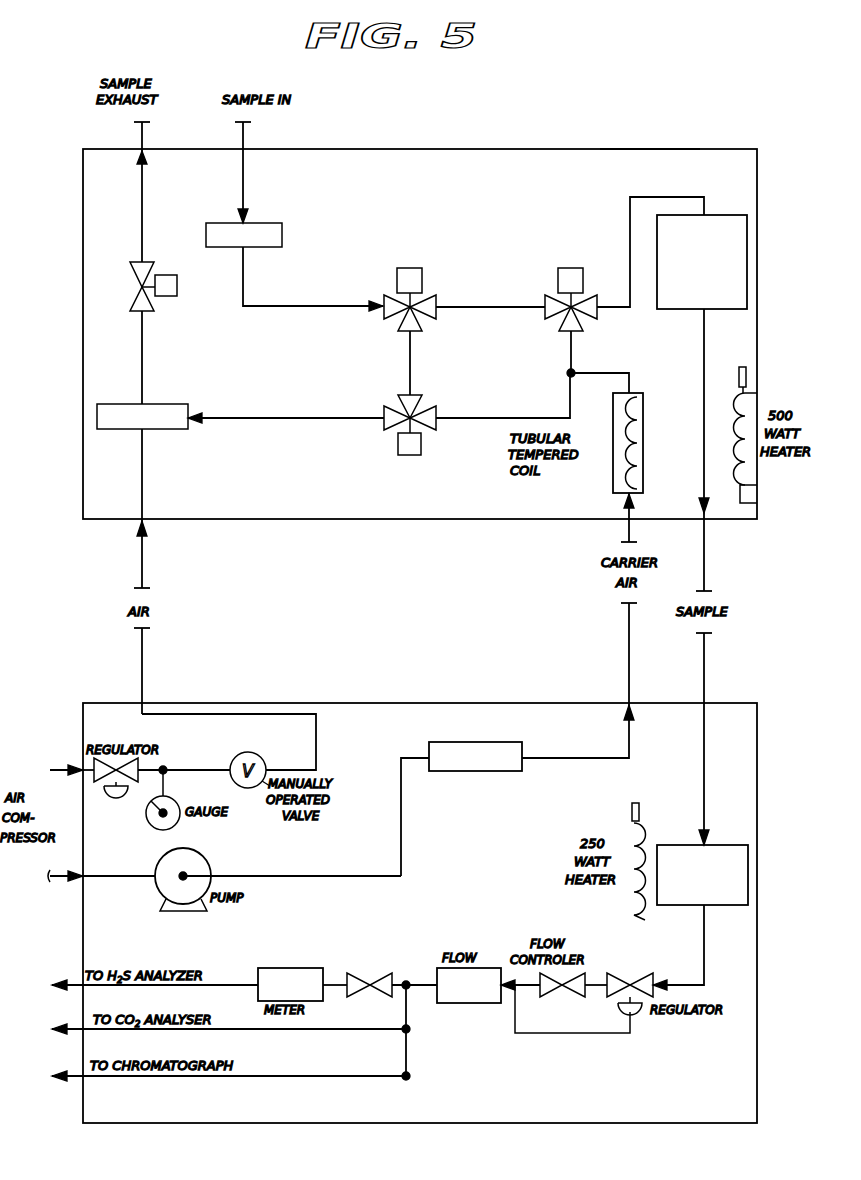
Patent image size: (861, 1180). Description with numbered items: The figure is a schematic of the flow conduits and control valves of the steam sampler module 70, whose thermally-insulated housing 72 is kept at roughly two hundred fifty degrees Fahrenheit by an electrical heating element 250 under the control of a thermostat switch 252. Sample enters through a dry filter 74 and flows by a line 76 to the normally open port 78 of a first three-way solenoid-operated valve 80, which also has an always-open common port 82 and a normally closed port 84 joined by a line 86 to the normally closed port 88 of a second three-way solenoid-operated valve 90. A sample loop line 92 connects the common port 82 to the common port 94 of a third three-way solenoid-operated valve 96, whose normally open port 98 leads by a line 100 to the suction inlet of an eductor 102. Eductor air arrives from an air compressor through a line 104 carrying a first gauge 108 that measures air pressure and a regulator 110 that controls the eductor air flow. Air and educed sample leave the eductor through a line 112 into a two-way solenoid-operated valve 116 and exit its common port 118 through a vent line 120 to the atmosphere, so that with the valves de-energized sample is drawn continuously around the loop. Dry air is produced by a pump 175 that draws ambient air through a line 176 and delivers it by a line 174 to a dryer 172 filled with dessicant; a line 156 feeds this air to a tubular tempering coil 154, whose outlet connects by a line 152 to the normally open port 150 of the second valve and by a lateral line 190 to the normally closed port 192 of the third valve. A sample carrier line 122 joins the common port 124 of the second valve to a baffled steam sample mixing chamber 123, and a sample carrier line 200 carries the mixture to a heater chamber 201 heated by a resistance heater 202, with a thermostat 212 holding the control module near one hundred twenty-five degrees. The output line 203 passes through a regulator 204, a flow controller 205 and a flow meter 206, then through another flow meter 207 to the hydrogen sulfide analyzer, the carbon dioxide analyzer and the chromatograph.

The steam sampler module 70 is at (432, 149).
The thermally-insulated housing 72 is at (645, 124).
The dry filter 74 is at (282, 236).
The line 76 is at (298, 310).
The normally open port 78 is at (383, 313).
The first three-way solenoid-operated valve 80 is at (422, 275).
The common port 82 is at (424, 328).
The normally closed port 84 is at (436, 306).
The line 86 is at (492, 310).
The normally closed port 88 is at (548, 318).
The second three-way solenoid-operated valve 90 is at (566, 268).
The sample loop line 92 is at (412, 360).
The common port 94 is at (400, 410).
The third three-way solenoid-operated valve 96 is at (413, 458).
The normally open port 98 is at (385, 428).
The line 100 is at (278, 420).
The eductor 102 is at (168, 404).
The line 104 is at (145, 475).
The first gauge 108 is at (180, 820).
The regulator 110 is at (140, 763).
The line 112 is at (145, 358).
The two-way solenoid-operated valve 116 is at (178, 292).
The common port 118 is at (150, 266).
The vent line 120 is at (150, 210).
The sample carrier line 122 is at (630, 217).
The baffled steam sample mixing chamber 123 is at (706, 222).
The common port 124 is at (597, 315).
The normally open port 150 is at (585, 328).
The line 152 is at (618, 374).
The tubular tempering coil 154 is at (643, 455).
The line 156 is at (600, 758).
The dryer 172 is at (513, 772).
The line 174 is at (402, 850).
The pump 175 is at (205, 866).
The line 176 is at (108, 876).
The lateral line 190 is at (505, 418).
The normally closed port 192 is at (437, 428).
The sample carrier line 200 is at (703, 420).
The heater chamber 201 is at (724, 897).
The resistance heater 202 is at (642, 920).
The output line 203 is at (686, 983).
The regulator 204 is at (605, 1000).
The flow controller 205 is at (555, 1000).
The flow meter 206 is at (437, 1005).
The flow meter 207 is at (316, 968).
The thermostat 212 is at (630, 805).
The electrical heating element 250 is at (757, 504).
The thermostat switch 252 is at (747, 366).